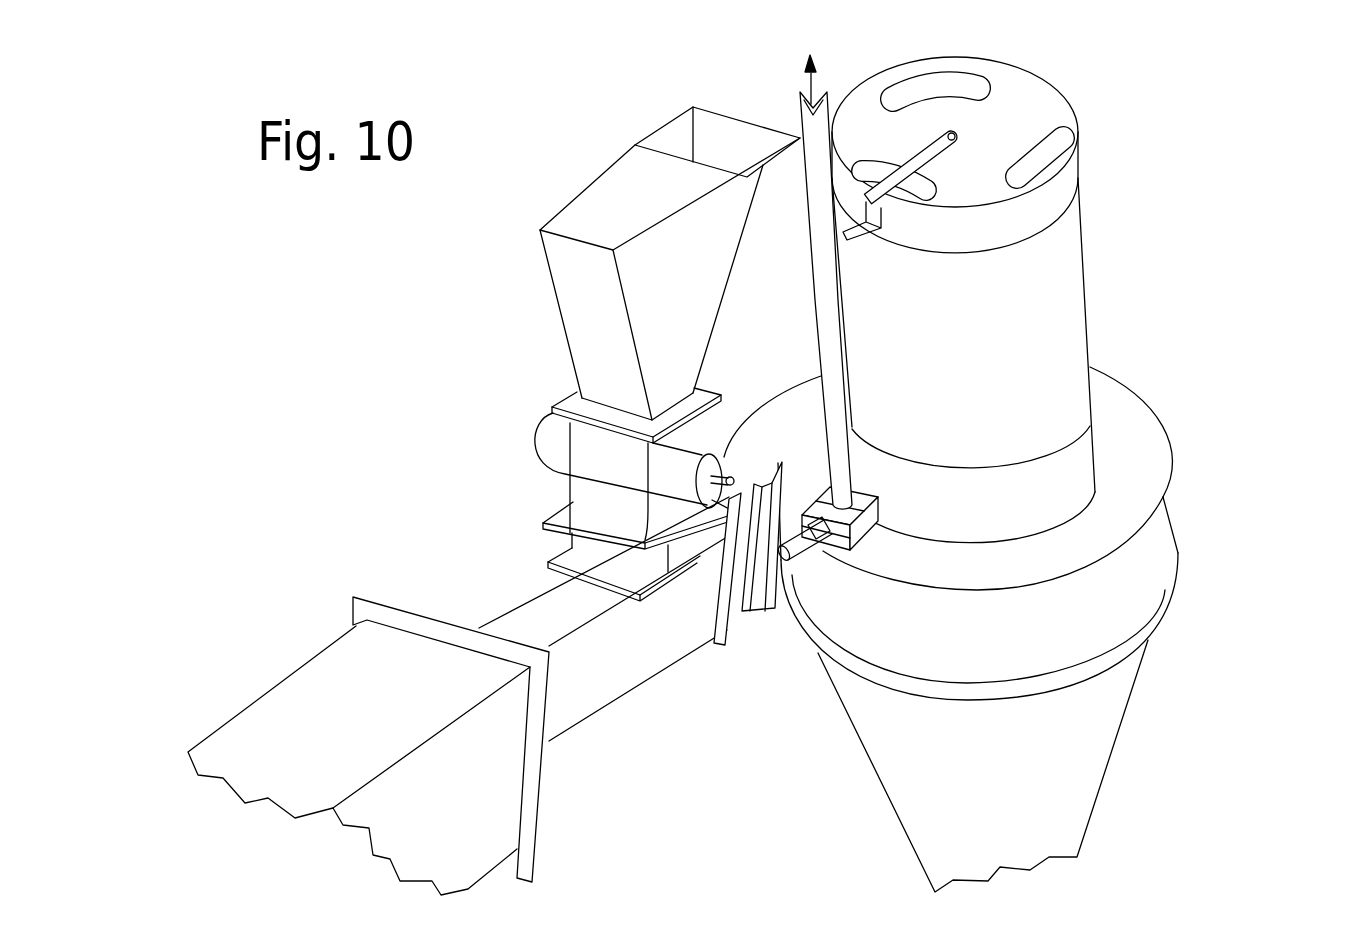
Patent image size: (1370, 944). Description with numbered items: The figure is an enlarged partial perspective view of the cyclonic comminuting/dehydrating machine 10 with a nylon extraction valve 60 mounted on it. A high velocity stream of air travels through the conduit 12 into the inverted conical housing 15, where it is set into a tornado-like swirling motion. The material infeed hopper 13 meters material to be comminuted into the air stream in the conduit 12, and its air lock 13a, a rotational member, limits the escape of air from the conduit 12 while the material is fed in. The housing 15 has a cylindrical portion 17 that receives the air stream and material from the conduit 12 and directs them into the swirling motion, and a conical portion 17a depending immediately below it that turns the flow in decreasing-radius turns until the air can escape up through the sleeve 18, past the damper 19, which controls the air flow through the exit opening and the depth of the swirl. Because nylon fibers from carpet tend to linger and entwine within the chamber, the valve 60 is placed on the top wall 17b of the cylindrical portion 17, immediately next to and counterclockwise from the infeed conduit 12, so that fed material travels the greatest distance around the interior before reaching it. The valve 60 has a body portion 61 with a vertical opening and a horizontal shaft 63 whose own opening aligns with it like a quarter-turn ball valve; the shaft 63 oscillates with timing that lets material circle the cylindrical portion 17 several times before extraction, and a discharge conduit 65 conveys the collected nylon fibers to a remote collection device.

The cyclonic comminuting/dehydrating machine 10 is at (1212, 242).
The conduit 12 is at (582, 695).
The material infeed hopper 13 is at (588, 215).
The air lock 13a is at (545, 448).
The inverted conical housing 15 is at (1214, 616).
The cylindrical portion 17 is at (1150, 553).
The conical portion 17a is at (1122, 698).
The top wall 17b is at (1124, 433).
The sleeve 18 is at (1065, 344).
The damper 19 is at (1076, 102).
The nylon extraction valve 60 is at (813, 600).
The body portion 61 is at (873, 537).
The shaft 63 is at (810, 565).
The discharge conduit 65 is at (801, 128).